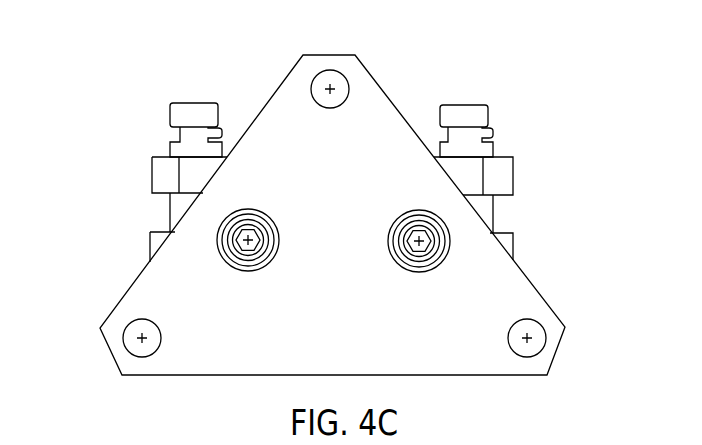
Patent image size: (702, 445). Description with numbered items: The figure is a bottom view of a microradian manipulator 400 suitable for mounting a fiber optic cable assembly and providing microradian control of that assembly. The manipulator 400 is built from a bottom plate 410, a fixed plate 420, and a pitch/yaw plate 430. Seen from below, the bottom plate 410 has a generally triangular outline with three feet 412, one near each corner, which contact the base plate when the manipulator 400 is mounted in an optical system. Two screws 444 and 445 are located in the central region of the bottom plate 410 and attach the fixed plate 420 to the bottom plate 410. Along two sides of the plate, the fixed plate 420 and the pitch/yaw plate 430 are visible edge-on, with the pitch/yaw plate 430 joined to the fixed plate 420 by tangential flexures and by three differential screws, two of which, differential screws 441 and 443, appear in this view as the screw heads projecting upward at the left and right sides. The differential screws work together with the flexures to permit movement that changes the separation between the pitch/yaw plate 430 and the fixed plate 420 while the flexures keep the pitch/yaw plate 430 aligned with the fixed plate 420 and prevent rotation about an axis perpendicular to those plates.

The microradian manipulator 400 is at (204, 36).
The bottom plate 410 is at (522, 280).
The feet 412 is at (339, 80).
The fixed plate 420 is at (512, 243).
The pitch/yaw plate 430 is at (503, 170).
The differential screw 441 is at (180, 119).
The differential screw 443 is at (478, 112).
The screw 444 is at (248, 256).
The screw 445 is at (420, 257).